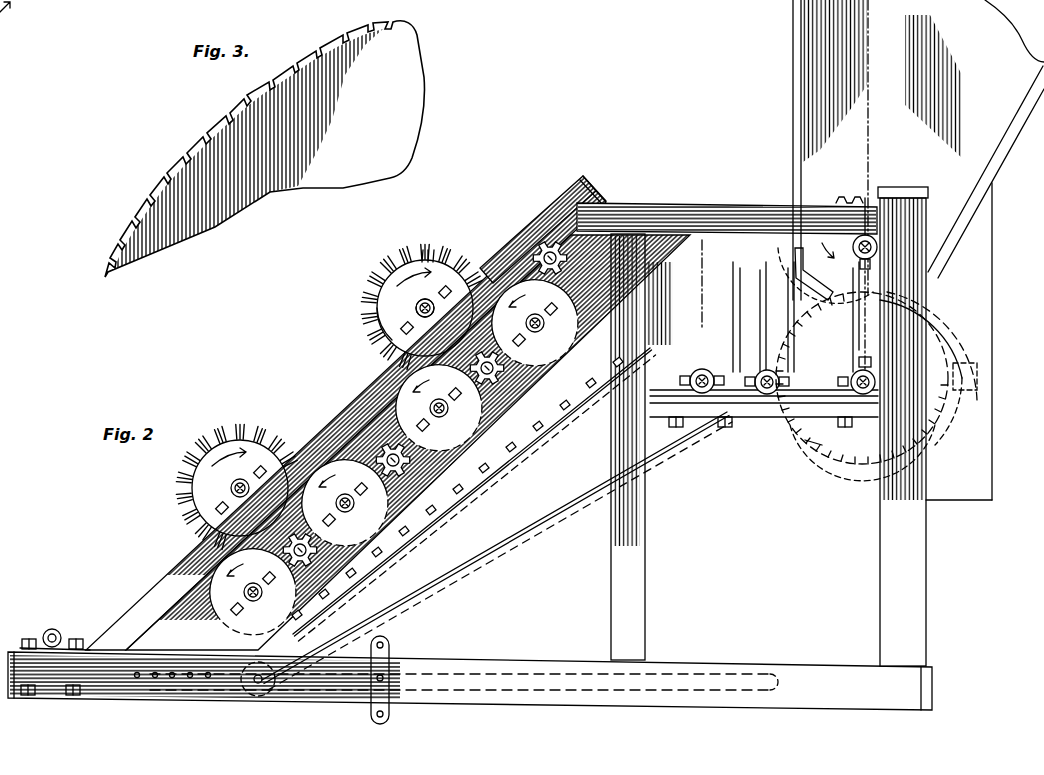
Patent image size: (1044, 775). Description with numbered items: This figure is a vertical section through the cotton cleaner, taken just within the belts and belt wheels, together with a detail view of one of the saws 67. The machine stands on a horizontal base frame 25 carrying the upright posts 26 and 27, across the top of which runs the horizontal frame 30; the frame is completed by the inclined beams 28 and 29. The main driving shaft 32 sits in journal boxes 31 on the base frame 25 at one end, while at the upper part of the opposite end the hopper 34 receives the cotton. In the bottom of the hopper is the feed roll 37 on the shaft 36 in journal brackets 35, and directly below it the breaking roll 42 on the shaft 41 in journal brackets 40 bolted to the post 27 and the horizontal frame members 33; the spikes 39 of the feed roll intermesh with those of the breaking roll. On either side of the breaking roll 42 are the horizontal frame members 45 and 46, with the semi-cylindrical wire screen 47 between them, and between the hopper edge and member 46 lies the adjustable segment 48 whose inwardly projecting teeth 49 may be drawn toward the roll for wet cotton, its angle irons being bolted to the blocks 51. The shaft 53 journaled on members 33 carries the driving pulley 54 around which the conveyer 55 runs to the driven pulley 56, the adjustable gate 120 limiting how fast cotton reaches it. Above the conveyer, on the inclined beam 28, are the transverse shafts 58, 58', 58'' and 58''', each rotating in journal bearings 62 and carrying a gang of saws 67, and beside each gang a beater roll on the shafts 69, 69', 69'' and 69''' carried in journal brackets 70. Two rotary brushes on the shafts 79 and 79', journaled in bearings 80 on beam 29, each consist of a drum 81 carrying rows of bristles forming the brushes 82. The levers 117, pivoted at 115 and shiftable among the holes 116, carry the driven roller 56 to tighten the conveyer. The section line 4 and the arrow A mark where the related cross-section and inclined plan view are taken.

In FIG. 2, the horizontal base frame 25 is at (470, 680).
In FIG. 2, the upright post 26 is at (642, 447).
In FIG. 2, the upright post 27 is at (903, 426).
In FIG. 2, the inclined beam 28 is at (408, 442).
In FIG. 2, the inclined beam 29 is at (346, 416).
In FIG. 2, the horizontal frame 30 is at (727, 218).
In FIG. 2, the journal boxes 31 is at (82, 638).
In FIG. 2, the main driving shaft 32 is at (55, 628).
In FIG. 2, the horizontal frame members 33 is at (765, 408).
In FIG. 2, the hopper 34 is at (795, 110).
In FIG. 2, the journal brackets 35 is at (838, 228).
In FIG. 2, the shaft 36 is at (857, 258).
In FIG. 2, the feed roll 37 is at (865, 198).
In FIG. 2, the spikes 39 is at (820, 256).
In FIG. 2, the journal brackets 40 is at (850, 380).
In FIG. 2, the shaft 41 is at (859, 368).
In FIG. 2, the breaking roll 42 is at (802, 445).
In FIG. 2, the horizontal frame member 45 is at (772, 368).
In FIG. 2, the horizontal frame member 46 is at (970, 392).
In FIG. 2, the semi-cylindrical wire screen 47 is at (788, 432).
In FIG. 2, the adjustable segment 48 is at (976, 300).
In FIG. 2, the inwardly projecting teeth 49 is at (975, 345).
In FIG. 2, the blocks 51 is at (985, 437).
In FIG. 2, the shaft 53 is at (703, 368).
In FIG. 2, the conveyer belt driving pulley 54 is at (762, 368).
In FIG. 2, the conveyer 55 is at (534, 532).
In FIG. 2, the driven pulley 56 is at (262, 690).
In FIG. 2, the transverse shaft 58 is at (535, 323).
In FIG. 2, the transverse shaft 58' is at (439, 408).
In FIG. 2, the transverse shaft 58'' is at (345, 503).
In FIG. 2, the transverse shaft 58''' is at (236, 592).
In FIG. 2, the journal bearings 62 is at (473, 472).
In FIG. 3, the saw 67 is at (197, 150).
In FIG. 2, the shaft 69 is at (571, 258).
In FIG. 2, the shaft 69' is at (498, 377).
In FIG. 2, the shaft 69'' is at (411, 472).
In FIG. 2, the shaft 69''' is at (318, 559).
In FIG. 2, the journal brackets 70 is at (534, 252).
In FIG. 2, the shaft 79 is at (421, 306).
In FIG. 2, the shaft 79' is at (236, 486).
In FIG. 2, the journal bearings 80 is at (433, 302).
In FIG. 2, the cylinder or drum 81 is at (385, 325).
In FIG. 2, the brushes 82 is at (428, 250).
In FIG. 2, the pivotal points 115 is at (190, 678).
In FIG. 2, the holes 116 is at (137, 678).
In FIG. 2, the levers 117 is at (503, 688).
In FIG. 2, the adjustable gate 120 is at (719, 285).
In FIG. 2, the section line 4 is at (888, 35).
In FIG. 2, the arrow A is at (268, 344).